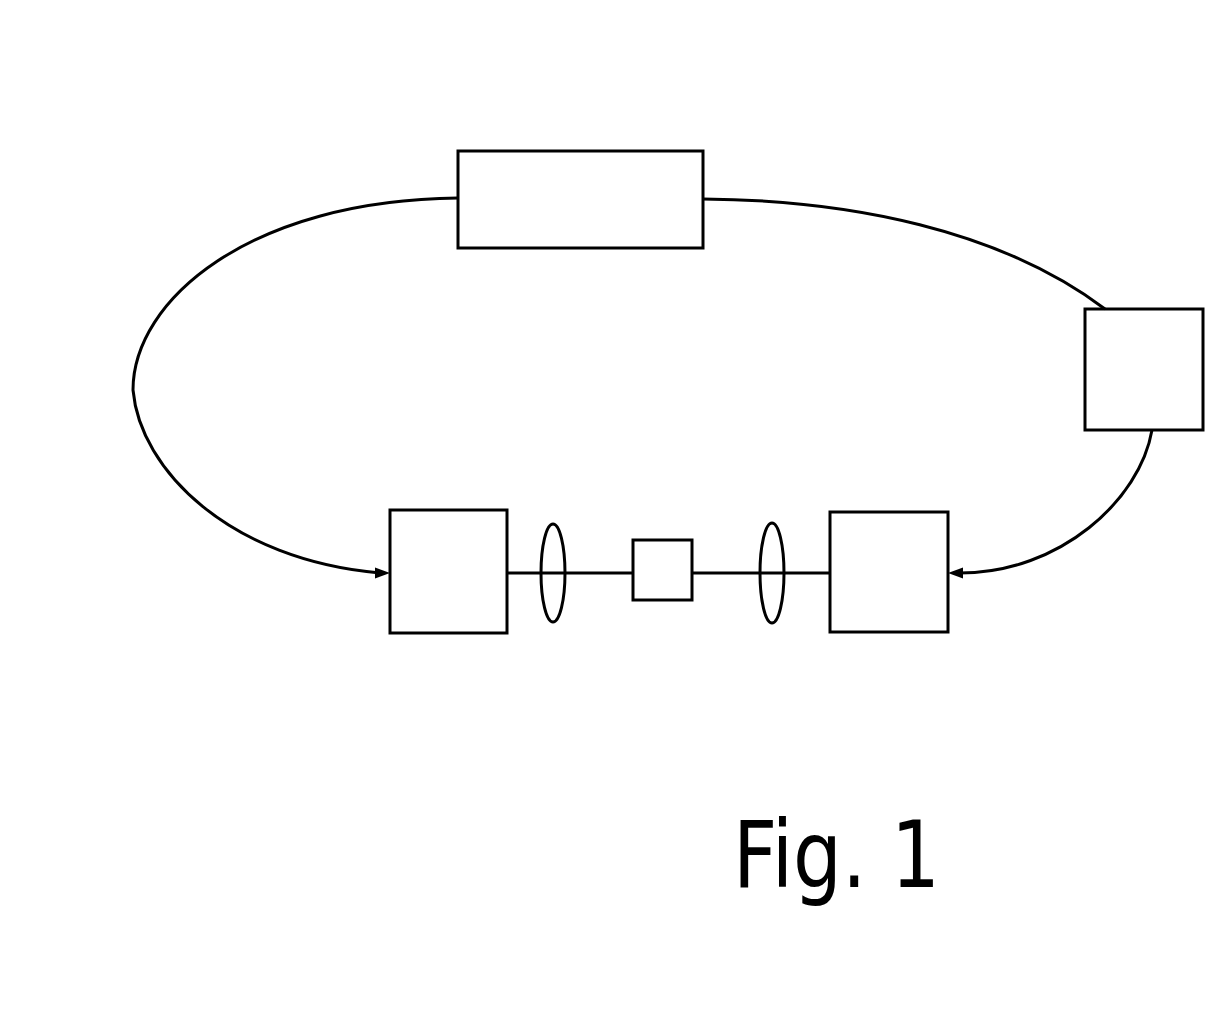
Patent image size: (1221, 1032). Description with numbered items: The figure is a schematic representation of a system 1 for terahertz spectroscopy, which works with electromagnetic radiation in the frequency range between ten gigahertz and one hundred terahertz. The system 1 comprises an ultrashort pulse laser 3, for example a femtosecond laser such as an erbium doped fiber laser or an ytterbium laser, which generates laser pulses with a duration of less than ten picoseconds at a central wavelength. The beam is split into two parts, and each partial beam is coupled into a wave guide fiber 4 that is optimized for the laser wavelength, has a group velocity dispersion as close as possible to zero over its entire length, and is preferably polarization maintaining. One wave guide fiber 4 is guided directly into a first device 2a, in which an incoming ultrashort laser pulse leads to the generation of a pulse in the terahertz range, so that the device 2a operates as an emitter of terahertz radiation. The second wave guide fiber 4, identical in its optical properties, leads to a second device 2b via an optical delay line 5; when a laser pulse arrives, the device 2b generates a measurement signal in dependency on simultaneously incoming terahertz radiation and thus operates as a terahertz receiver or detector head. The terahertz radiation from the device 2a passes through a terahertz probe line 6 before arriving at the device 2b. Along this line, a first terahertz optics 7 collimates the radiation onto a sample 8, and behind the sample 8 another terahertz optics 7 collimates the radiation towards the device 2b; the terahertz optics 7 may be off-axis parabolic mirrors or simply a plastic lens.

The system for terahertz spectroscopy 1 is at (240, 124).
The first device 2a is at (448, 571).
The second device 2b is at (889, 572).
The ultrashort pulse laser 3 is at (580, 199).
The wave guide fiber 4 is at (642, 388).
The optical delay line 5 is at (1144, 369).
The terahertz probe line 6 is at (614, 586).
The terahertz optics 7 is at (662, 494).
The sample 8 is at (662, 570).